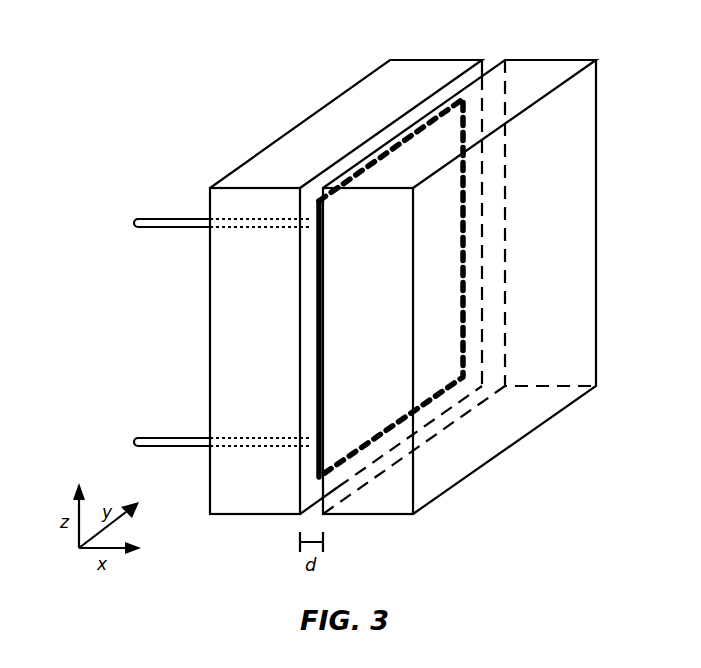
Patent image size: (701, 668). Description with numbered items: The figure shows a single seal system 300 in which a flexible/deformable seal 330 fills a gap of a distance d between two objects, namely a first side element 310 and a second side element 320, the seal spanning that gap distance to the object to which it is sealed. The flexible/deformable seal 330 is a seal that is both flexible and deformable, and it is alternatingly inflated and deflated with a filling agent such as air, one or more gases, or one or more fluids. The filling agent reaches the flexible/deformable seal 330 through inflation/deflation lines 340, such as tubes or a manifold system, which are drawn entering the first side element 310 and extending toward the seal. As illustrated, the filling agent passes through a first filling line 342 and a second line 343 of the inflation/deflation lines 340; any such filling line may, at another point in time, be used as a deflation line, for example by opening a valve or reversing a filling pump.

The single seal system 300 is at (163, 44).
The first side element 310 is at (427, 59).
The second side element 320 is at (562, 59).
The flexible/deformable seal 330 is at (398, 416).
The inflation/deflation lines 340 is at (93, 158).
The first filling line 342 is at (155, 218).
The second lead 343 is at (158, 437).